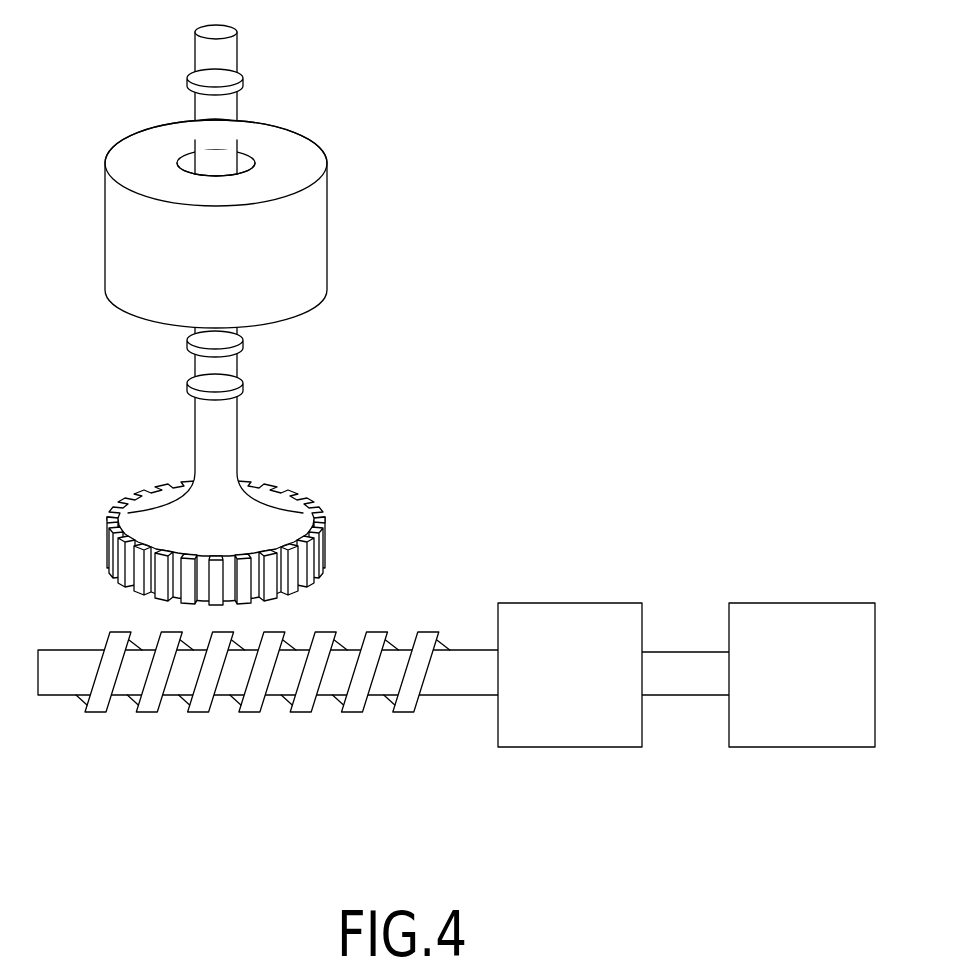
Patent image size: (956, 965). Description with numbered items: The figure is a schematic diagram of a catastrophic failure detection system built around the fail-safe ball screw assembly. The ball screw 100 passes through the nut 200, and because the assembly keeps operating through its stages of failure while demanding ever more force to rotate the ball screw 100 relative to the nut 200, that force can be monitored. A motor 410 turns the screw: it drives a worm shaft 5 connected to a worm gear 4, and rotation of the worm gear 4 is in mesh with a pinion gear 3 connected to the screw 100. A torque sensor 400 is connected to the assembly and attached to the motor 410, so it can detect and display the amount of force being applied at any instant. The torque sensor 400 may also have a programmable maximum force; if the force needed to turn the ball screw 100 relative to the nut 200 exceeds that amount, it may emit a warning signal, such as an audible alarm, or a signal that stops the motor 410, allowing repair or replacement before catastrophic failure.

The ball screw 100 is at (228, 55).
The nut 200 is at (327, 205).
The pinion gear 3 is at (323, 518).
The worm gear 4 is at (193, 710).
The worm shaft 5 is at (470, 690).
The torque sensor 400 is at (602, 603).
The motor 410 is at (828, 603).